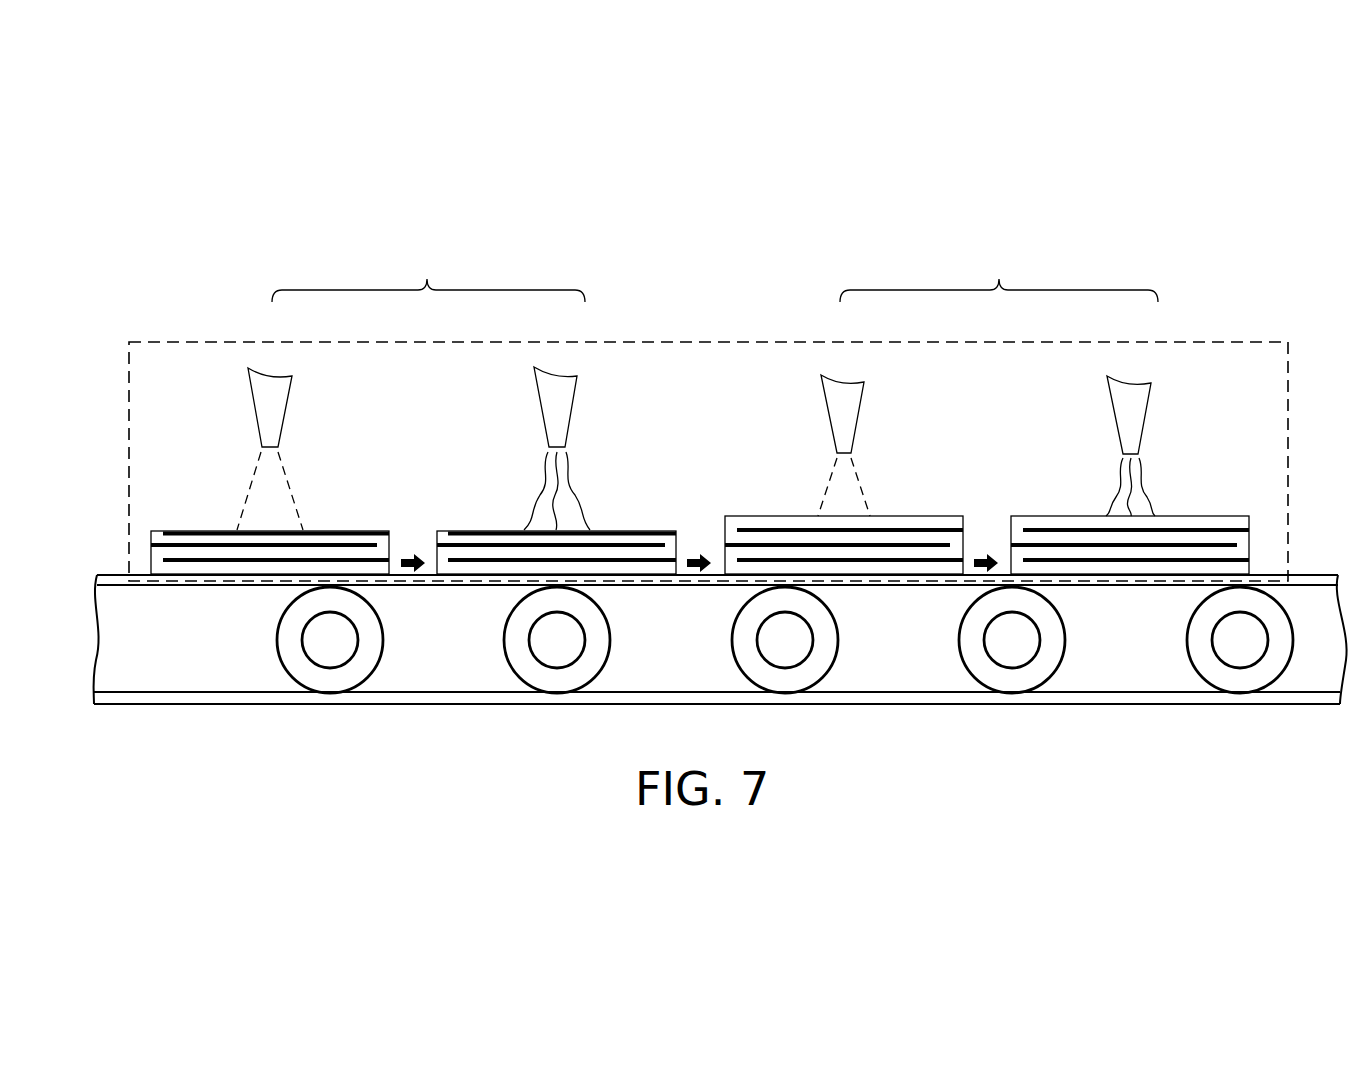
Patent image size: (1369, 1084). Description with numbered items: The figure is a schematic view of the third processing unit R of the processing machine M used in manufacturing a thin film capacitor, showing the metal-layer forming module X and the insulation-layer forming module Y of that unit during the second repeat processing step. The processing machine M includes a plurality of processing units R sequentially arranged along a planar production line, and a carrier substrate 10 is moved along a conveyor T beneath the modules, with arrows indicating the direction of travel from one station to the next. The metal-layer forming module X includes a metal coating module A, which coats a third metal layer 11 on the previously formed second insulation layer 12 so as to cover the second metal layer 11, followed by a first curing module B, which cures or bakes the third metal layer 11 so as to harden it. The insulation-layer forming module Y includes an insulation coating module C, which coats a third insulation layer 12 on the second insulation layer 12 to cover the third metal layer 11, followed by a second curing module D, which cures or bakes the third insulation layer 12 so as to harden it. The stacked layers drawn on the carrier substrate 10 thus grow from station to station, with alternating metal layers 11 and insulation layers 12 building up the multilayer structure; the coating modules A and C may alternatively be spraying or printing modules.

The carrier substrate 10 is at (218, 568).
The metal layer 11 is at (352, 531).
The insulation layer 12 is at (367, 536).
The metal coating module A is at (275, 358).
The first curing module B is at (561, 360).
The insulation coating module C is at (848, 364).
The second curing module D is at (1136, 366).
The conveyor T is at (163, 715).
The processing machine M is at (148, 217).
The processing unit R is at (202, 334).
The metal-layer forming module X is at (428, 274).
The insulation-layer forming module Y is at (999, 274).